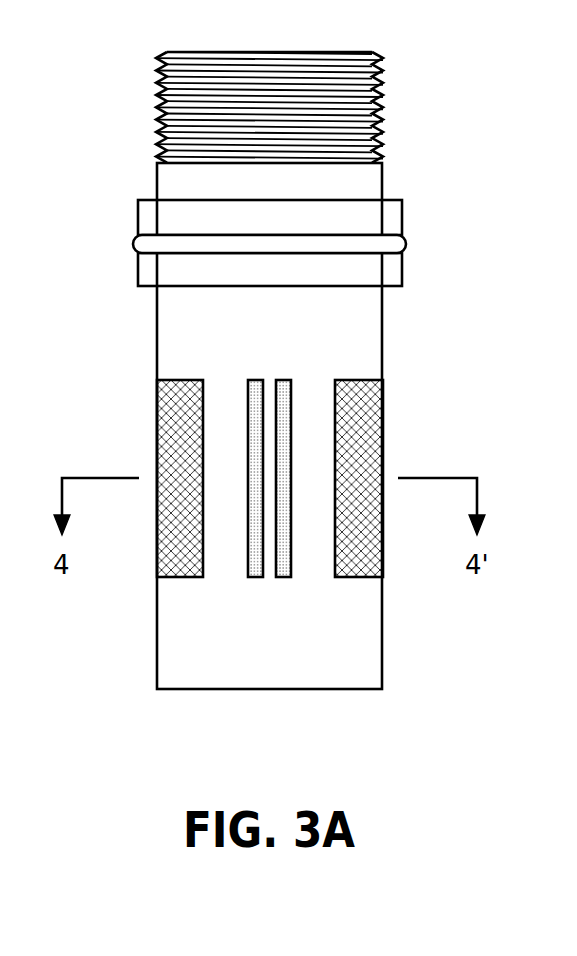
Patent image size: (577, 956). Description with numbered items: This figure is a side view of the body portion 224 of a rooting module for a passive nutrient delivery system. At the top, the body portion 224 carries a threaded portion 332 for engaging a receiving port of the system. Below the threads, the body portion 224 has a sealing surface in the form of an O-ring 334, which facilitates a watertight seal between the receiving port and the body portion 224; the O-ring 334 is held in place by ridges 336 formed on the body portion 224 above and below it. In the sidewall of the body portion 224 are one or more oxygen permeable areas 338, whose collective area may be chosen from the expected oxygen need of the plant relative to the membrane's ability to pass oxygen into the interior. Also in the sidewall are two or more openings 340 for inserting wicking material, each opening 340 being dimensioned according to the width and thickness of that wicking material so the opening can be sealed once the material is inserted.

The body portion 224 is at (327, 691).
The threaded portion 332 is at (438, 53).
The O-ring 334 is at (406, 245).
The ridges 336 is at (402, 219).
The oxygen permeable areas 338 is at (185, 577).
The openings 340 is at (253, 380).